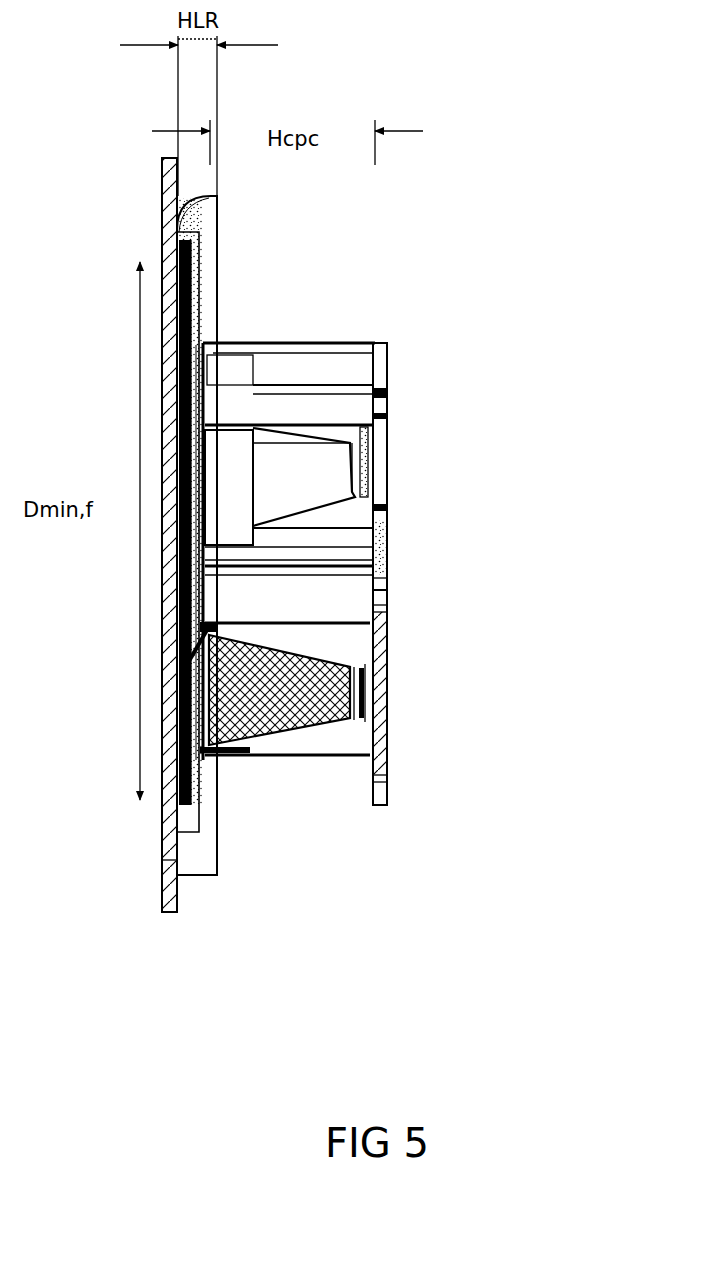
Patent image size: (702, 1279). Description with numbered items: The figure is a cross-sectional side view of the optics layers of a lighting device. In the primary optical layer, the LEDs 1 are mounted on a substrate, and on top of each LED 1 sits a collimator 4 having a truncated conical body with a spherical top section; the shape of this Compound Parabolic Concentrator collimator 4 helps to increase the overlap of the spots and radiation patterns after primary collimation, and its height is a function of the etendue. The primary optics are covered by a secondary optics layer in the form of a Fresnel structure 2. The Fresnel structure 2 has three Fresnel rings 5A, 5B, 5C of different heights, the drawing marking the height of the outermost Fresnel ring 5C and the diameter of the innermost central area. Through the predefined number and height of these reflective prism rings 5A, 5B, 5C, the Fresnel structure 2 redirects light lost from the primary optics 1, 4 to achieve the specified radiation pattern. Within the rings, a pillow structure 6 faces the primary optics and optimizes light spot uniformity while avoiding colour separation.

The LED 1 is at (380, 736).
The Fresnel structure 2 is at (158, 896).
The collimator 4 is at (258, 706).
The Fresnel ring 5A is at (185, 792).
The Fresnel ring 5B is at (185, 815).
The outermost Fresnel ring 5C is at (185, 857).
The pillow structure 6 is at (240, 630).